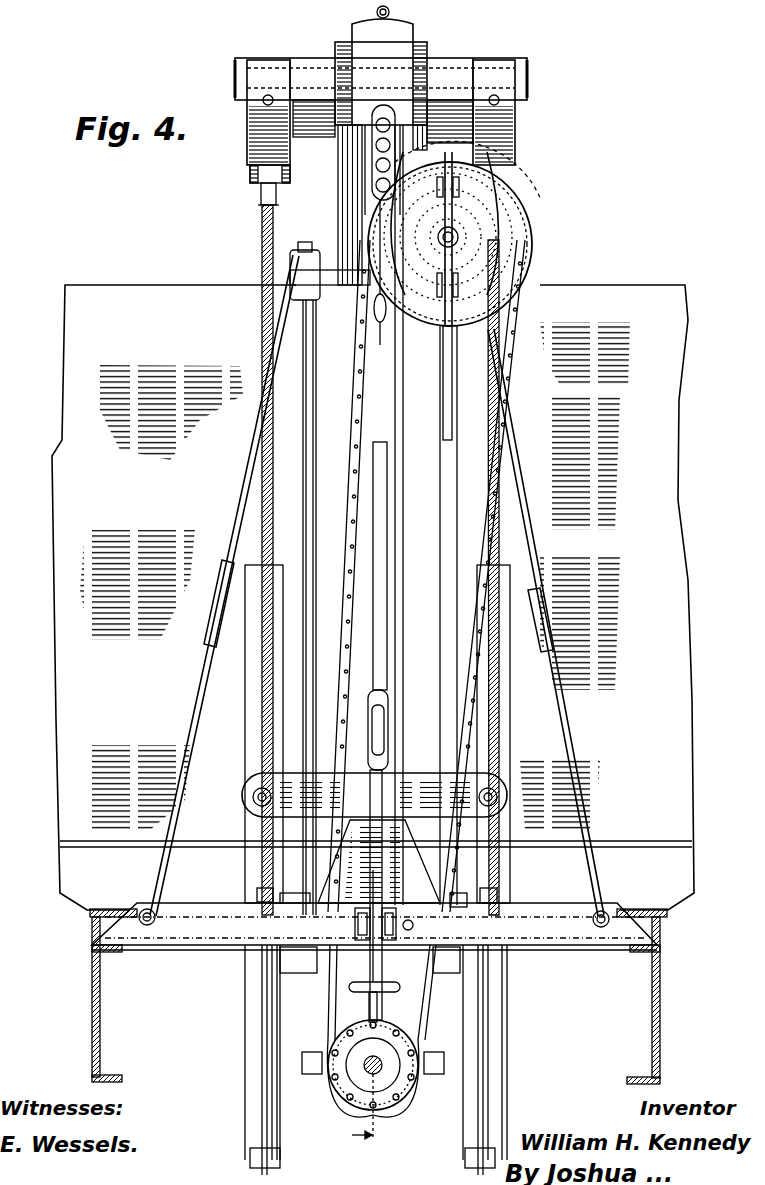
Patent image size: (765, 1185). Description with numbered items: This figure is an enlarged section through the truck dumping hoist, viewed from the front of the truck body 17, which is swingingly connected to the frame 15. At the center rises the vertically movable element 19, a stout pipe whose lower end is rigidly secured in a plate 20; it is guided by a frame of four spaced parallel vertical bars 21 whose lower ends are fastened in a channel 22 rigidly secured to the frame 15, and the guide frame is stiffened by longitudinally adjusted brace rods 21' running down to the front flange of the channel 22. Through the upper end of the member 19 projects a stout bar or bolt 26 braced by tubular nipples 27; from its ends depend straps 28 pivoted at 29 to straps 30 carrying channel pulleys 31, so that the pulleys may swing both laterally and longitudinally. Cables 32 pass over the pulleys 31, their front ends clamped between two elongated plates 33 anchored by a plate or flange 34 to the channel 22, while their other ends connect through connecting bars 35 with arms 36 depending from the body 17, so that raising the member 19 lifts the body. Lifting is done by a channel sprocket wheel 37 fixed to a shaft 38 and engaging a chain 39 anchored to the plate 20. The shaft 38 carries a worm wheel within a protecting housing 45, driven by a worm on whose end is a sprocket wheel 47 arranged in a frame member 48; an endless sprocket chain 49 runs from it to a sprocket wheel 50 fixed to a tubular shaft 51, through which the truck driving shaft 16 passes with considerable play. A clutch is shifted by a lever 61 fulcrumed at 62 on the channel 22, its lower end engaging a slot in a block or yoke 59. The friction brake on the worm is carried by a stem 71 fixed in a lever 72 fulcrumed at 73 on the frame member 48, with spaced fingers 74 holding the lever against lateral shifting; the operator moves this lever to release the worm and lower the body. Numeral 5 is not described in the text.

The shaft 5 is at (370, 876).
The frame 15 is at (101, 1023).
The rotary driving shaft 16 is at (348, 1135).
The body 17 is at (662, 463).
The vertically movable element 19 is at (385, 50).
The plate 20 is at (298, 903).
The bars 21 is at (367, 577).
The brace rods 21' is at (386, 585).
The channel 22 is at (200, 950).
The bar or bolt 26 is at (316, 57).
The tubular nipples 27 is at (300, 58).
The straps 28 is at (262, 78).
The pivotal connection 29 is at (263, 101).
The straps 30 is at (250, 172).
The channel pulleys 31 is at (278, 200).
The cables 32 is at (262, 245).
The elongated plates 33 is at (243, 797).
The plate or flange 34 is at (400, 826).
The connecting bars 35 is at (262, 1077).
The arms 36 is at (277, 1107).
The channel sprocket wheel 37 is at (382, 151).
The shaft 38 is at (337, 162).
The chain 39 is at (380, 330).
The protecting housing 45 is at (448, 130).
The sprocket wheel 47 is at (528, 262).
The frame member 48 is at (488, 222).
The endless sprocket chain 49 is at (512, 380).
The sprocket wheel 50 is at (398, 1035).
The tubular shaft 51 is at (385, 1085).
The block or yoke 59 is at (377, 992).
The lever 61 is at (388, 512).
The fulcrum 62 is at (393, 940).
The stem 71 is at (459, 238).
The lever 72 is at (444, 345).
The fulcrum 73 is at (462, 185).
The spaced fingers 74 is at (468, 290).